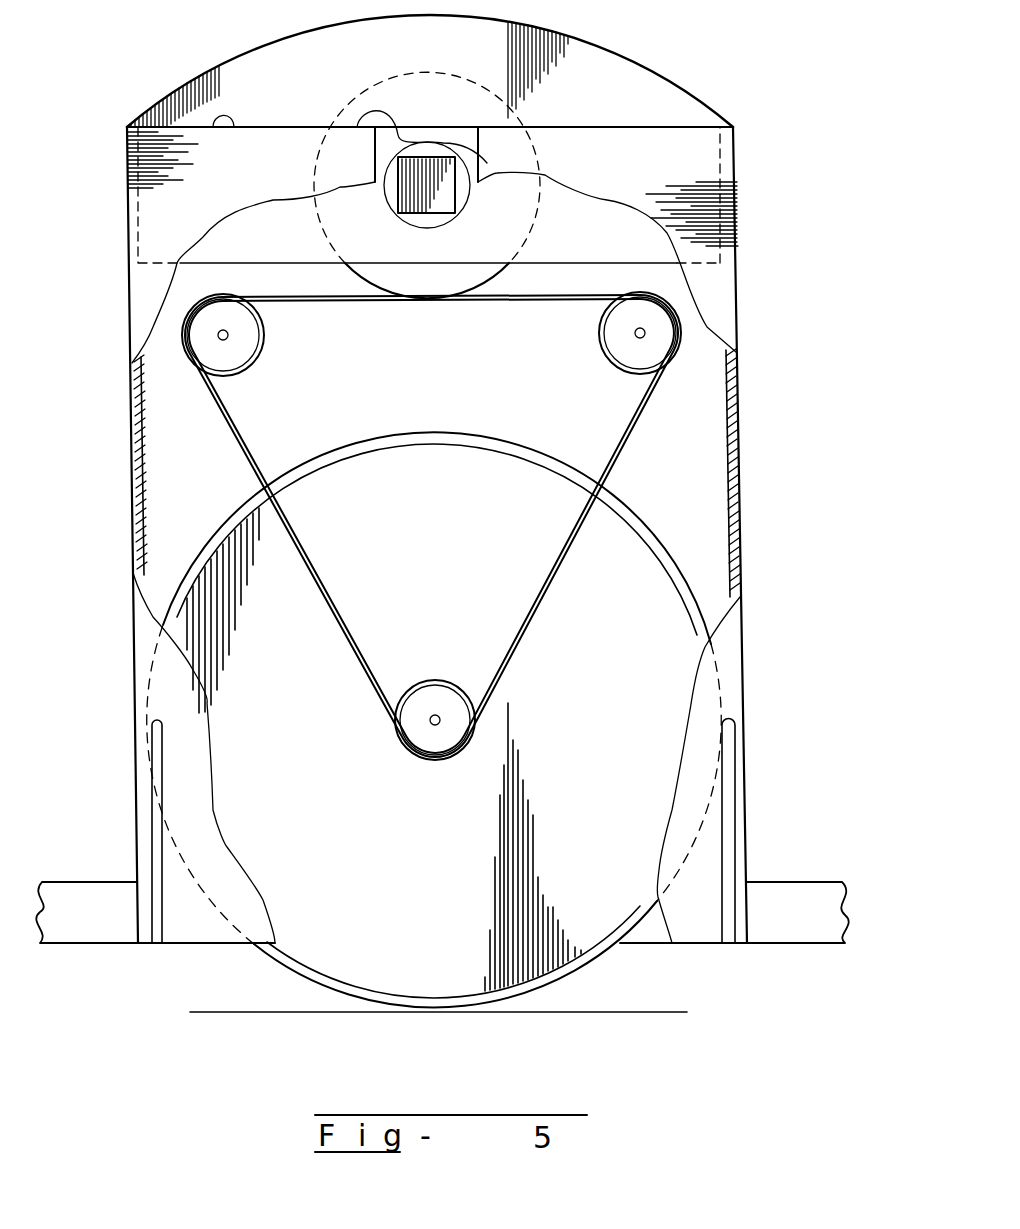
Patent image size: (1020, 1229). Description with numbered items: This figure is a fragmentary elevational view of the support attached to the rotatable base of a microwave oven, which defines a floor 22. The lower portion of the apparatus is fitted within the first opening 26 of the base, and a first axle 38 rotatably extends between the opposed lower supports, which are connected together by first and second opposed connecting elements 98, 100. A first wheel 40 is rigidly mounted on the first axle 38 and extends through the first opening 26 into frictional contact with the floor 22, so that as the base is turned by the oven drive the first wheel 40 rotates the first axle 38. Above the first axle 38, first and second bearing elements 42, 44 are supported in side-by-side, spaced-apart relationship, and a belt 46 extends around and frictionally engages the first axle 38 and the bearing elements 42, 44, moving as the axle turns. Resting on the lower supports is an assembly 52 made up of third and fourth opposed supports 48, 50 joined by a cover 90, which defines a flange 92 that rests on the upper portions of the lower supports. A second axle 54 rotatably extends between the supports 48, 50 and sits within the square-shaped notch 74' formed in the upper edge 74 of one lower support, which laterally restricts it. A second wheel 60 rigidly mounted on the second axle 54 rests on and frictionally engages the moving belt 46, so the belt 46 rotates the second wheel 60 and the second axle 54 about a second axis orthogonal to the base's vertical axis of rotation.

The floor 22 is at (618, 1012).
The first opening 26 is at (140, 903).
The first axle 38 is at (432, 730).
The first wheel 40 is at (360, 977).
The first bearing element 42 is at (623, 330).
The second bearing element 44 is at (243, 340).
The belt 46 is at (551, 578).
The third support 48 is at (126, 188).
The fourth support 50 is at (739, 247).
The assembly 52 is at (738, 207).
The second axle 54 is at (527, 167).
The second wheel 60 is at (430, 277).
The upper edge 74 is at (201, 156).
The square-shaped notch 74' is at (364, 150).
The cover 90 is at (622, 52).
The flange 92 is at (739, 143).
The first connecting element 98 is at (740, 408).
The second connecting element 100 is at (130, 462).